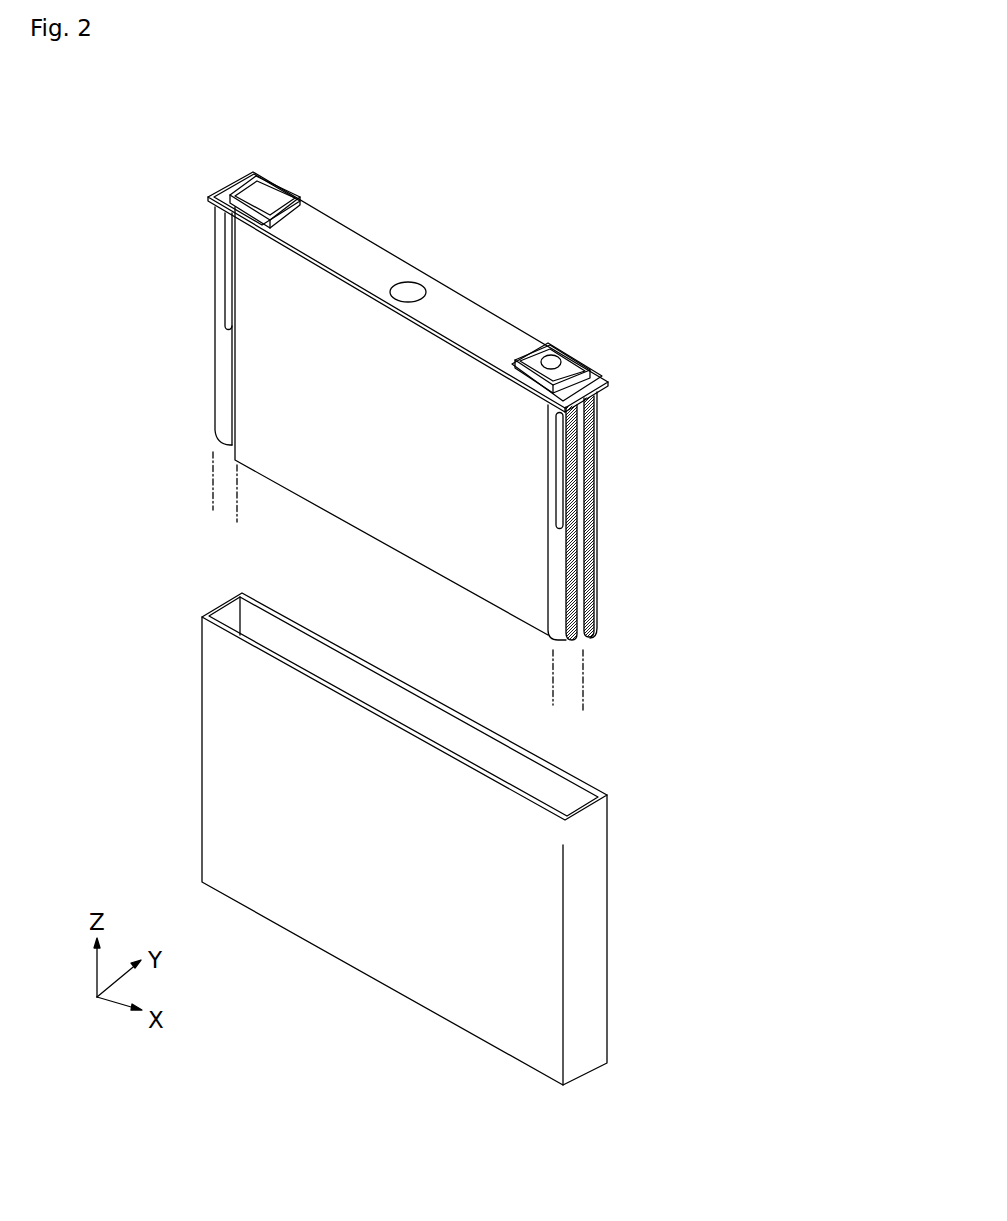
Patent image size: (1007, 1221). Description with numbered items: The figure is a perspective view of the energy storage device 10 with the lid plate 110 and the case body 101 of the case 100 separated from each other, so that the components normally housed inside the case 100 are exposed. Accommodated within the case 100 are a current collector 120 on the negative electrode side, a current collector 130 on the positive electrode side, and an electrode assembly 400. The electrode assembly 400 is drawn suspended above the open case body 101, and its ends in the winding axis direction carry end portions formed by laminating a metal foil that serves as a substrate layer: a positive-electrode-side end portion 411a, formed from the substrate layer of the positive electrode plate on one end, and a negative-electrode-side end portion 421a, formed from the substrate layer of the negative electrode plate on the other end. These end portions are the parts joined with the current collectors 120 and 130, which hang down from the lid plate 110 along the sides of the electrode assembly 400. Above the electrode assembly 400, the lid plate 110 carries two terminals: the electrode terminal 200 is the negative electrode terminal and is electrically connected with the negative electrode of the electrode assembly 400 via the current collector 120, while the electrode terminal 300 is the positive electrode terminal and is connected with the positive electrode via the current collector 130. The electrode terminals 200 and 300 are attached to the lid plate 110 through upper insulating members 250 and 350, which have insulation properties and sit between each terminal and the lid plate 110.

The energy storage device 10 is at (555, 182).
The case 100 is at (508, 751).
The case body 101 is at (598, 832).
The lid plate 110 is at (611, 381).
The current collector 120 is at (555, 448).
The current collector 130 is at (221, 280).
The electrode terminal 200 is at (547, 347).
The upper insulating member 250 is at (591, 378).
The electrode terminal 300 is at (272, 192).
The upper insulating member 350 is at (228, 201).
The electrode assembly 400 is at (397, 522).
The positive-electrode-side end portion 411a is at (236, 522).
The negative-electrode-side end portion 421a is at (583, 712).